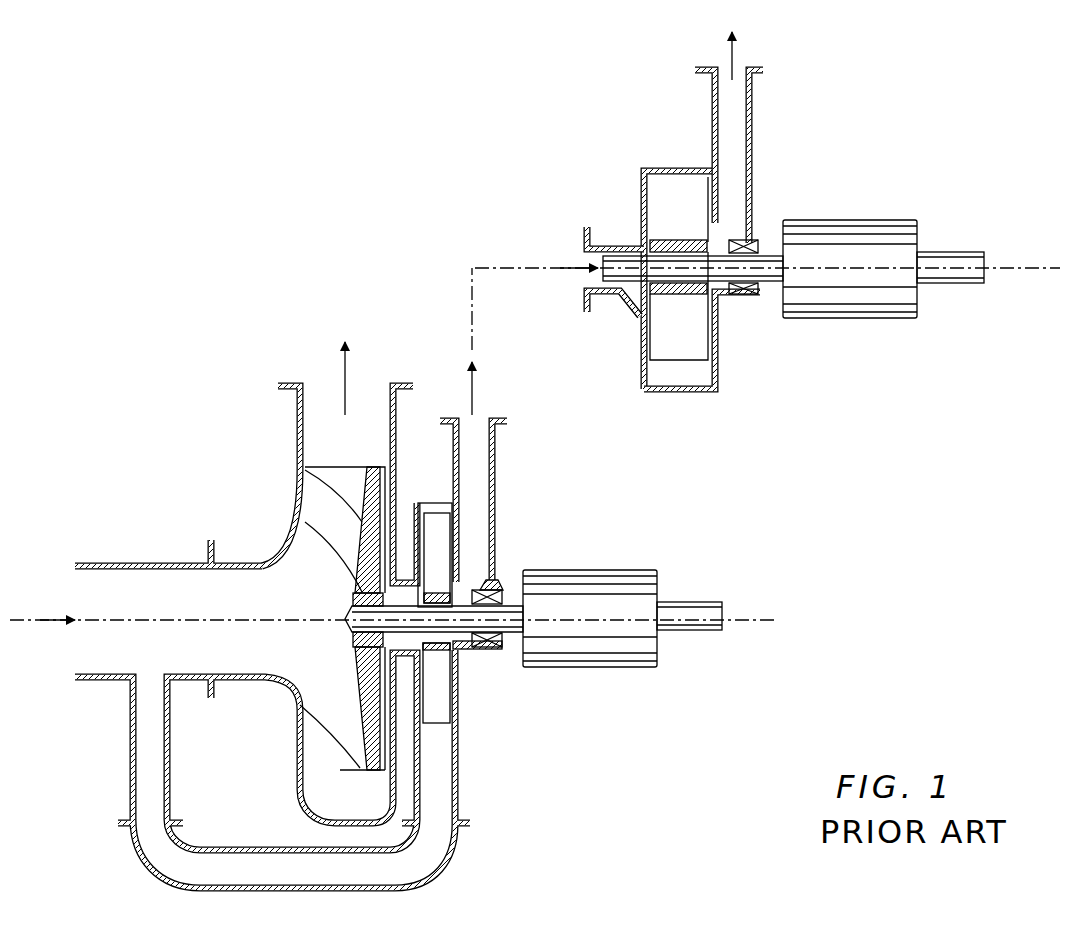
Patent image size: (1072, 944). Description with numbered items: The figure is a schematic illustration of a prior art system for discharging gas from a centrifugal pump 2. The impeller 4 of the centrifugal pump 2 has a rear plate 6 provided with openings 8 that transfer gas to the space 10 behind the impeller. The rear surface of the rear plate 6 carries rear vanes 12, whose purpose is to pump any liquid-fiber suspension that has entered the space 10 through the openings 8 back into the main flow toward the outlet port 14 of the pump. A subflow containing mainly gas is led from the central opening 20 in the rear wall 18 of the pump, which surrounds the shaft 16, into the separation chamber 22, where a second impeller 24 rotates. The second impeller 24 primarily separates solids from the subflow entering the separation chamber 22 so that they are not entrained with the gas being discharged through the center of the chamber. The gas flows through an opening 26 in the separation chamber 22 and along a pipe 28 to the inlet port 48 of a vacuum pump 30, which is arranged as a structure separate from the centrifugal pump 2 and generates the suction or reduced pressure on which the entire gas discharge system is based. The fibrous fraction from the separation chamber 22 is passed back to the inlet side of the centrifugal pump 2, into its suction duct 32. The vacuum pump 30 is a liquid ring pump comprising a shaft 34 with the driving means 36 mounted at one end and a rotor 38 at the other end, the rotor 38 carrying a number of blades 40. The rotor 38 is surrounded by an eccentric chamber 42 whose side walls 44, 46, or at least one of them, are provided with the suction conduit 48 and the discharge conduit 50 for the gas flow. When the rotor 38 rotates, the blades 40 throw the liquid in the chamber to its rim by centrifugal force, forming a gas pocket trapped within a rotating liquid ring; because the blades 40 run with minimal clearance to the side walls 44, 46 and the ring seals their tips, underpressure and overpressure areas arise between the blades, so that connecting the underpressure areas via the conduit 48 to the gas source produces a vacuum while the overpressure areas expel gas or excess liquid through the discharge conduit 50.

The centrifugal pump 2 is at (268, 464).
The impeller 4 is at (300, 586).
The rear plate 6 is at (300, 467).
The openings 8 is at (300, 513).
The space behind the impeller 10 is at (373, 773).
The rear vanes 12 is at (360, 723).
The outlet port 14 is at (328, 408).
The shaft 16 is at (477, 613).
The rear wall 18 is at (453, 557).
The central opening 20 is at (405, 595).
The separation chamber 22 is at (405, 545).
The second impeller 24 is at (435, 700).
The opening 26 is at (455, 647).
The pipe 28 is at (473, 448).
The vacuum pump 30 is at (603, 215).
The suction duct 32 is at (160, 577).
The shaft 34 is at (772, 267).
The driving means 36 is at (882, 247).
The rotor 38 is at (683, 293).
The blades 40 is at (690, 345).
The eccentric chamber 42 is at (685, 375).
The side wall 44 is at (640, 220).
The side wall 46 is at (717, 193).
The suction conduit 48 is at (587, 260).
The discharge conduit 50 is at (737, 117).